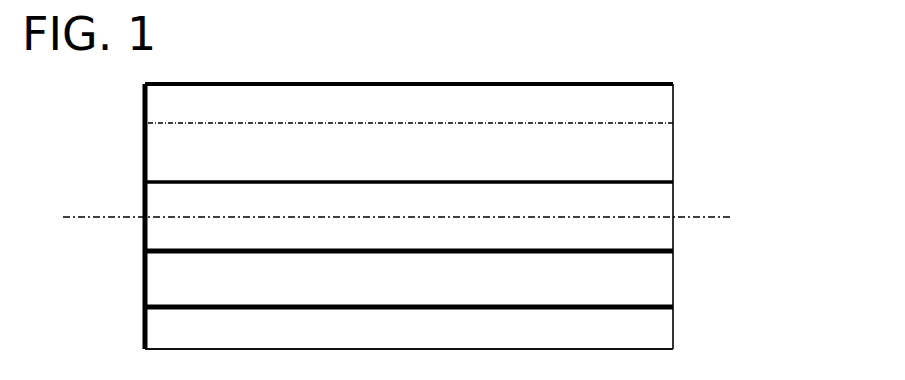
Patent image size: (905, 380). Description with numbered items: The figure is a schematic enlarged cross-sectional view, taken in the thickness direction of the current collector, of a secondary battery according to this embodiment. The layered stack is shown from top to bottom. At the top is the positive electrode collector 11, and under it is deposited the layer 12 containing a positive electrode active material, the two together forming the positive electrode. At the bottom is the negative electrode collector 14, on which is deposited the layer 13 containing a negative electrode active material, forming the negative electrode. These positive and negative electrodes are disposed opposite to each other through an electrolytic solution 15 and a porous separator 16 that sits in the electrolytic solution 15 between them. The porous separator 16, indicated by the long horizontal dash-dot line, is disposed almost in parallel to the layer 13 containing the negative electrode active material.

The positive electrode collector 11 is at (660, 104).
The layer containing a positive electrode active material 12 is at (663, 144).
The layer containing a negative electrode active material 13 is at (667, 287).
The negative electrode collector 14 is at (663, 322).
The electrolytic solution 15 is at (675, 195).
The porous separator 16 is at (750, 215).